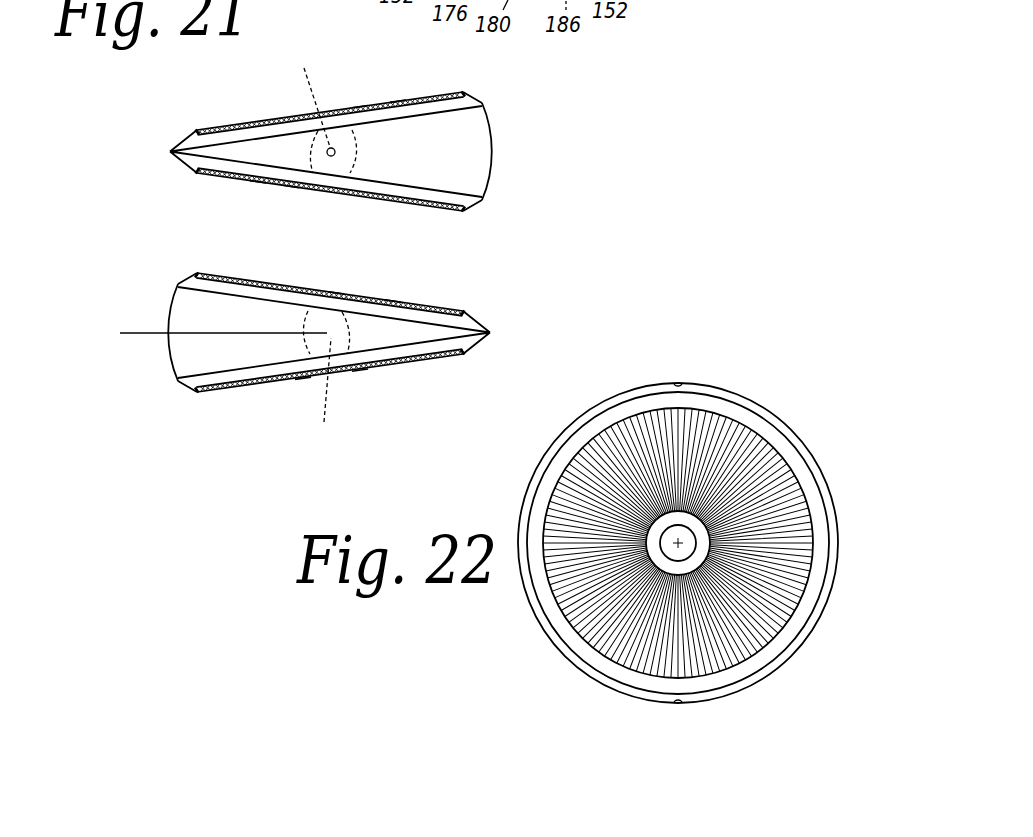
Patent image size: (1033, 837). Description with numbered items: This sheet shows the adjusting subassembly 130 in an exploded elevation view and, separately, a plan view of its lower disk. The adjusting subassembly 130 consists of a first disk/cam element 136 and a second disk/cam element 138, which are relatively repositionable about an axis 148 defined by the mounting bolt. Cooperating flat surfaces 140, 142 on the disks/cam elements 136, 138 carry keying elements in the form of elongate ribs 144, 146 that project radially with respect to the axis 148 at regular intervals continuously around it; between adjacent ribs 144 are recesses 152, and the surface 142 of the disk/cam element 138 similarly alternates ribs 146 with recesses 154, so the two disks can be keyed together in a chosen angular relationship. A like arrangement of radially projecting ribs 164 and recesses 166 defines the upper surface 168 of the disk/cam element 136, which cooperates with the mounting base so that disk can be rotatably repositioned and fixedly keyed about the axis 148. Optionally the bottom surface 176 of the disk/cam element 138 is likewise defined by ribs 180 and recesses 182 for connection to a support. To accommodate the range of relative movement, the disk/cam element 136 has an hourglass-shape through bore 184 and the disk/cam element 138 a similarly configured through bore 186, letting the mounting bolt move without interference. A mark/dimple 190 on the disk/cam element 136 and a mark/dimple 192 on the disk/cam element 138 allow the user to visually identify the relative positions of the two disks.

In FIG. 21, the adjusting subassembly 130 is at (148, 254).
In FIG. 21, the first disk/cam element 136 is at (352, 151).
In FIG. 21, the second disk/cam element 138 is at (314, 344).
In FIG. 22, the second disk/cam element 138 is at (805, 642).
In FIG. 21, the flat surface 140 is at (463, 211).
In FIG. 21, the flat surface 142 is at (462, 311).
In FIG. 22, the flat surface 142 is at (767, 523).
In FIG. 21, the elongate ribs 144 is at (291, 184).
In FIG. 21, the elongate ribs 146 is at (336, 294).
In FIG. 22, the elongate ribs 146 is at (745, 433).
In FIG. 22, the axis 148 is at (683, 533).
In FIG. 21, the recesses 152 is at (257, 178).
In FIG. 21, the recesses 154 is at (393, 301).
In FIG. 22, the recesses 154 is at (752, 432).
In FIG. 21, the radially projecting ribs 164 is at (461, 91).
In FIG. 21, the recesses 166 is at (398, 100).
In FIG. 21, the upper surface 168 is at (360, 106).
In FIG. 21, the bottom surface 176 is at (420, 358).
In FIG. 21, the radially projecting ribs 180 is at (303, 378).
In FIG. 21, the recesses 182 is at (361, 370).
In FIG. 21, the hourglass-shape through bore 184 is at (302, 95).
In FIG. 21, the through bore 186 is at (318, 394).
In FIG. 21, the mark/dimple 190 is at (328, 149).
In FIG. 21, the mark/dimple 192 is at (124, 335).